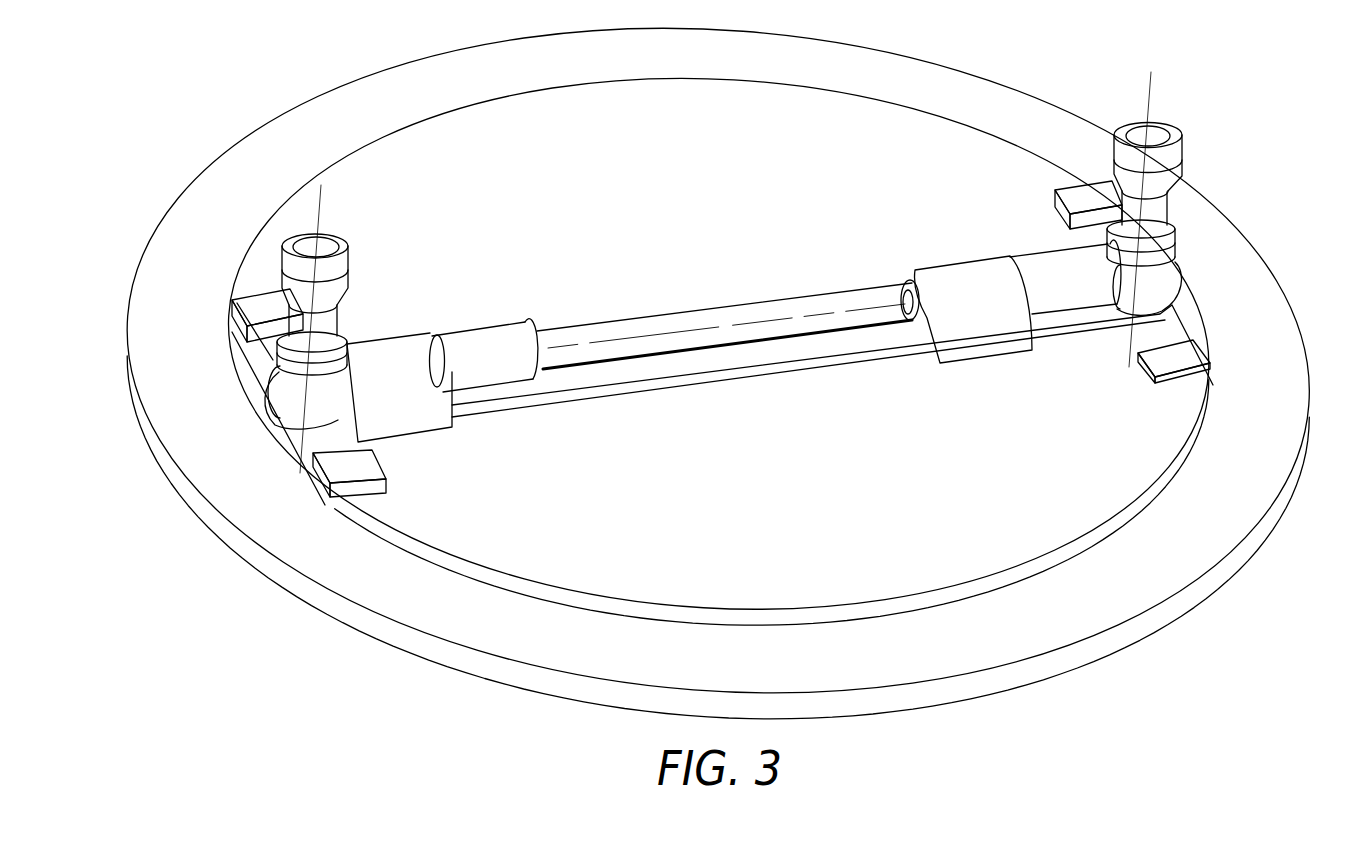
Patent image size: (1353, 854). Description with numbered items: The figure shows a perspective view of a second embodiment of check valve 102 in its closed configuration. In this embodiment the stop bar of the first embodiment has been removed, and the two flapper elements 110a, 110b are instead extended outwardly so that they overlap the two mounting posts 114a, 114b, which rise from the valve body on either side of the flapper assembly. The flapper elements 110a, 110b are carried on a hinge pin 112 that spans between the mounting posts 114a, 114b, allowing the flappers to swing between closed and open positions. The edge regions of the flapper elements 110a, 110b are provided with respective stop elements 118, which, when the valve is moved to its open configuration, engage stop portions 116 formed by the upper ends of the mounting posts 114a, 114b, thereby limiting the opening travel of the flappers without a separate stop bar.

The check valve 102 is at (289, 614).
The flapper element 110a is at (756, 596).
The flapper element 110b is at (683, 98).
The hinge pin 112 is at (538, 338).
The mounting post 114a is at (285, 368).
The mounting post 114b is at (1176, 256).
The stop portion 116 is at (349, 278).
The stop element 118 is at (246, 312).